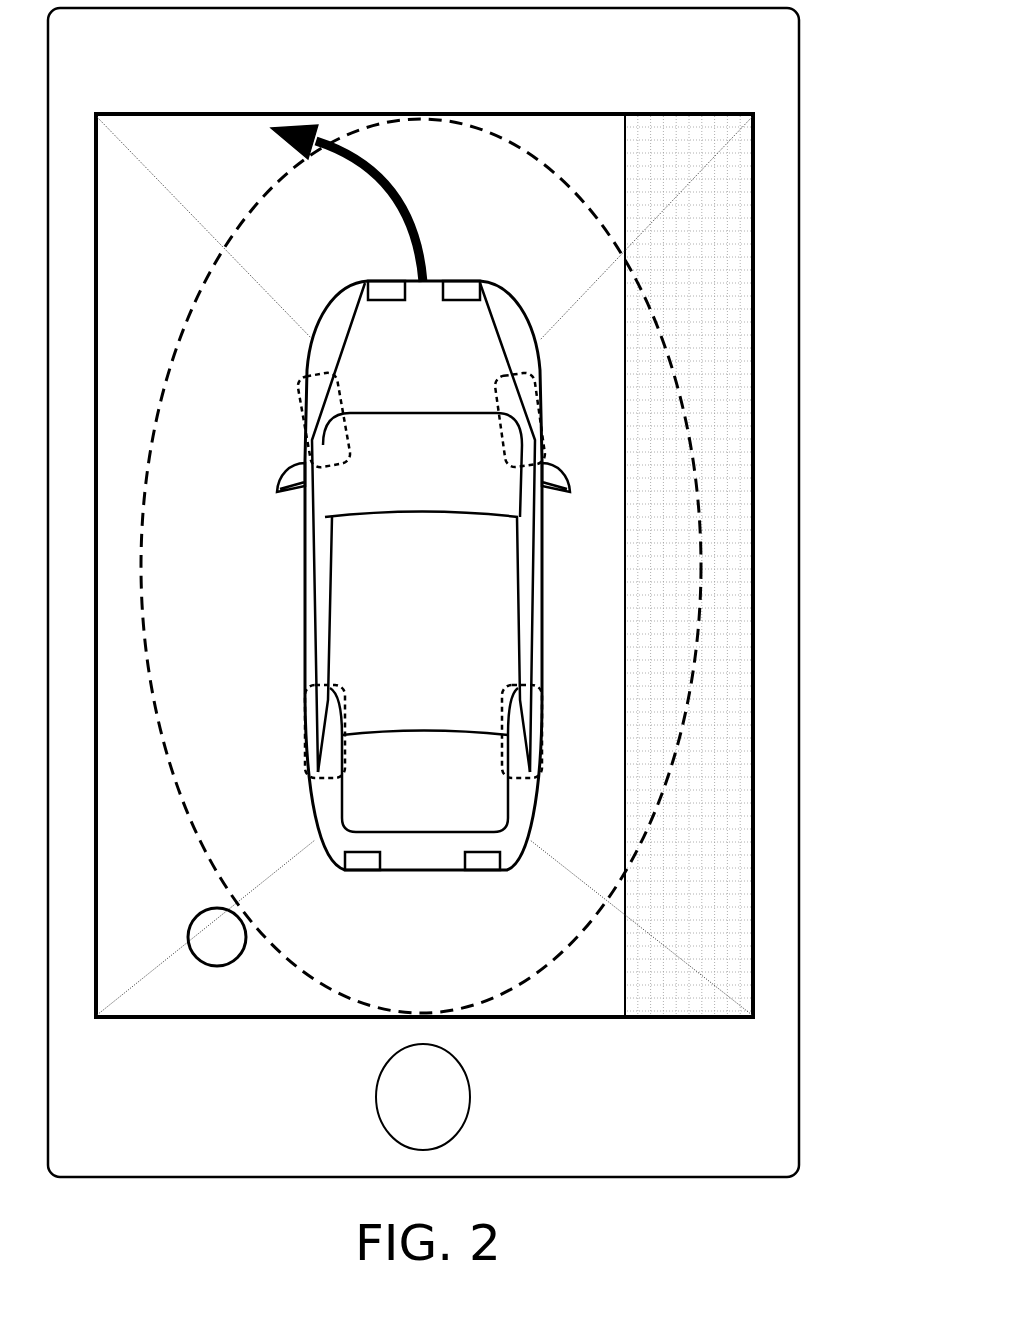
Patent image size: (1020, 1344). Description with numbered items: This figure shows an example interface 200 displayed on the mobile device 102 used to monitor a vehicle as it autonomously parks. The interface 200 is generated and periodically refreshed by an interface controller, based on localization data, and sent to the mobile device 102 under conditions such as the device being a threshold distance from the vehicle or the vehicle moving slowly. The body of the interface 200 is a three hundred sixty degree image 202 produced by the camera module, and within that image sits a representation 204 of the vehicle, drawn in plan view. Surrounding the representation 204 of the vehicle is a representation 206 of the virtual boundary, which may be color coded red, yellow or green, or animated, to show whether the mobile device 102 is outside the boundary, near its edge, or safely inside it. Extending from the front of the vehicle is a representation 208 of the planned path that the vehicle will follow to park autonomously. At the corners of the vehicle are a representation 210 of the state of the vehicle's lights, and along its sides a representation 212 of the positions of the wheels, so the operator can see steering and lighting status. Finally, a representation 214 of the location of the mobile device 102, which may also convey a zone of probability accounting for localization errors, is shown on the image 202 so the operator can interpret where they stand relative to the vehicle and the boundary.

The mobile device 102 is at (800, 128).
The interface 200 is at (582, 110).
The 360 degree image 202 is at (753, 963).
The representation of the vehicle 204 is at (543, 355).
The representation of the virtual boundary 206 is at (157, 427).
The representation of the planned path 208 is at (415, 215).
The representation of a state of the lights 210 is at (465, 282).
The representation of the positions of the wheels 212 is at (352, 440).
The representation of the location of the mobile device 214 is at (247, 930).